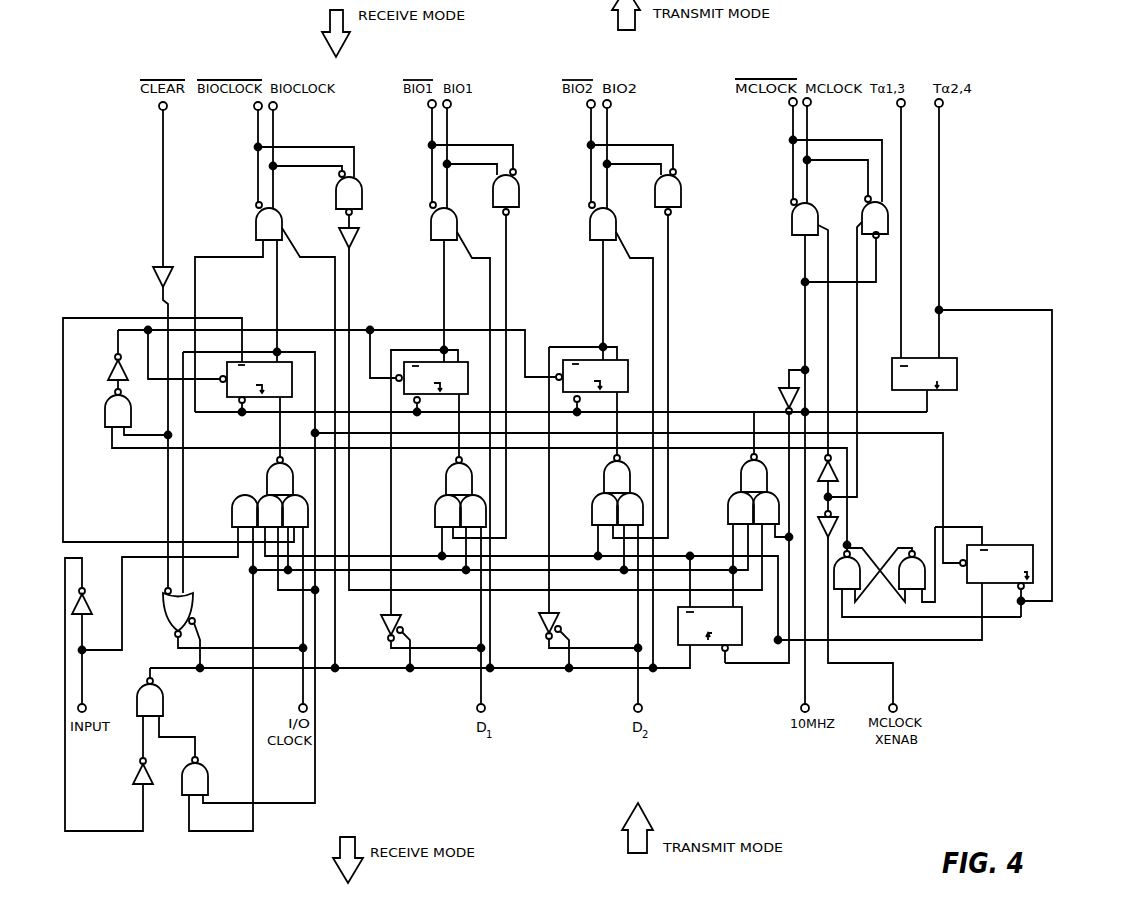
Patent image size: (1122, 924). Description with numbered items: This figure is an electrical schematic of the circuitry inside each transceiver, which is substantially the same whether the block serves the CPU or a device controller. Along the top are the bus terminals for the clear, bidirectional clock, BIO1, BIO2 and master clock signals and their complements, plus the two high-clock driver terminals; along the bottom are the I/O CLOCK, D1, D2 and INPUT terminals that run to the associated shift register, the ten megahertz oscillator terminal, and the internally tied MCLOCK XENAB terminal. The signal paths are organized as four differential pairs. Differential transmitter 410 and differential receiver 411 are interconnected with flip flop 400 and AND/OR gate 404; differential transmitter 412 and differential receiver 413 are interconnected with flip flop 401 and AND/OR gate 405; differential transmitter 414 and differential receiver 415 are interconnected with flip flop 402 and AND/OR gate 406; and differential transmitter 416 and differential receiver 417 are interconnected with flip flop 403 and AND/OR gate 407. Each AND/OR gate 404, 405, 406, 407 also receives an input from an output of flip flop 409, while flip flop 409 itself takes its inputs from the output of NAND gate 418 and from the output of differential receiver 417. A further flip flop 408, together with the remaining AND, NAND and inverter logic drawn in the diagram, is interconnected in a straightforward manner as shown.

The flip flop 400 is at (283, 398).
The flip flop 401 is at (461, 396).
The flip flop 402 is at (620, 394).
The flip flop 403 is at (957, 388).
The AND/OR gate 404 is at (265, 487).
The AND/OR gate 405 is at (440, 490).
The AND/OR gate 406 is at (600, 490).
The AND/OR gate 407 is at (745, 490).
The flip flop 408 is at (1003, 540).
The flip flop 409 is at (740, 609).
The differential transmitter 410 is at (282, 210).
The differential receiver 411 is at (362, 195).
The differential transmitter 412 is at (457, 210).
The differential receiver 413 is at (519, 195).
The differential transmitter 414 is at (616, 210).
The differential receiver 415 is at (681, 193).
The differential transmitter 416 is at (790, 219).
The differential receiver 417 is at (862, 201).
The NAND gate 418 is at (164, 690).